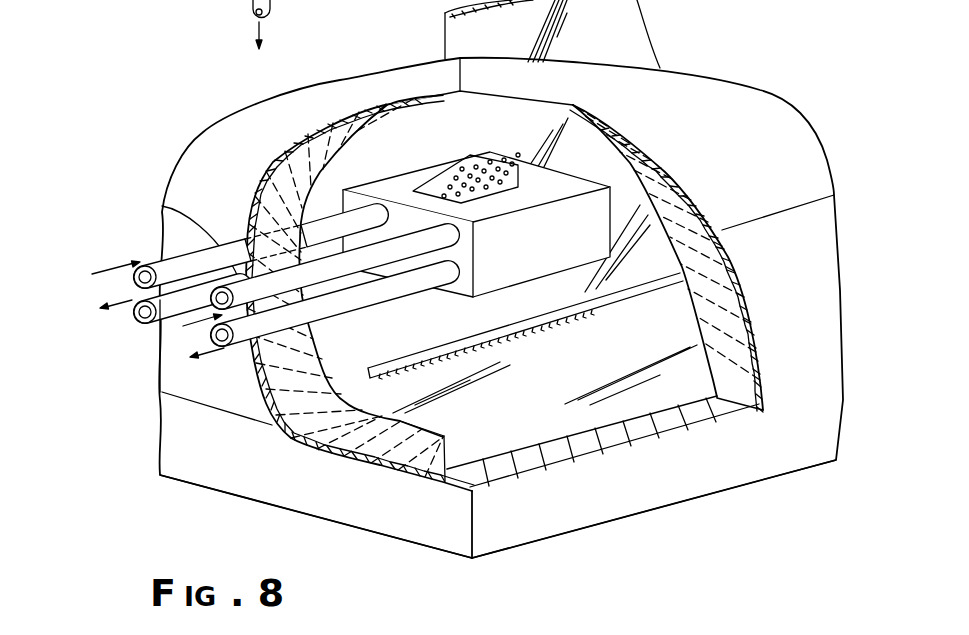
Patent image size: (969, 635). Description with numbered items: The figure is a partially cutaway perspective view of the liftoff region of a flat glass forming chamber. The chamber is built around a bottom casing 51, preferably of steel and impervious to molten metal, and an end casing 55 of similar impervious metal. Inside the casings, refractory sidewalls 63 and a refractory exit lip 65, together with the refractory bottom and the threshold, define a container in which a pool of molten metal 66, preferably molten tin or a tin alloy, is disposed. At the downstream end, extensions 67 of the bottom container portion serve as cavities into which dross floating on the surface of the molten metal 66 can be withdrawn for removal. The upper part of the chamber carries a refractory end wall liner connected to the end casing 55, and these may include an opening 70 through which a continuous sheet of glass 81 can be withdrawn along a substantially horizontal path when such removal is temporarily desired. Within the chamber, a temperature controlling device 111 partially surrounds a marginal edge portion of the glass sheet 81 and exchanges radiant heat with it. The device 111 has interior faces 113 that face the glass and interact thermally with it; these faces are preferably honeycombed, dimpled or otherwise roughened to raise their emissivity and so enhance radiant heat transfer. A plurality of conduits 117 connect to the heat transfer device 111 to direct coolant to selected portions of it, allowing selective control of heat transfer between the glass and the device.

The bottom casing 51 is at (508, 548).
The end casing 55 is at (746, 177).
The refractory sidewalls 63 is at (256, 373).
The refractory exit lip 65 is at (613, 433).
The pool of molten metal 66 is at (563, 390).
The extensions 67 is at (427, 462).
The opening 70 is at (724, 297).
The continuous sheet of glass 81 is at (630, 17).
The temperature controlling device 111 is at (420, 169).
The interior faces 113 is at (520, 176).
The conduits 117 is at (210, 259).